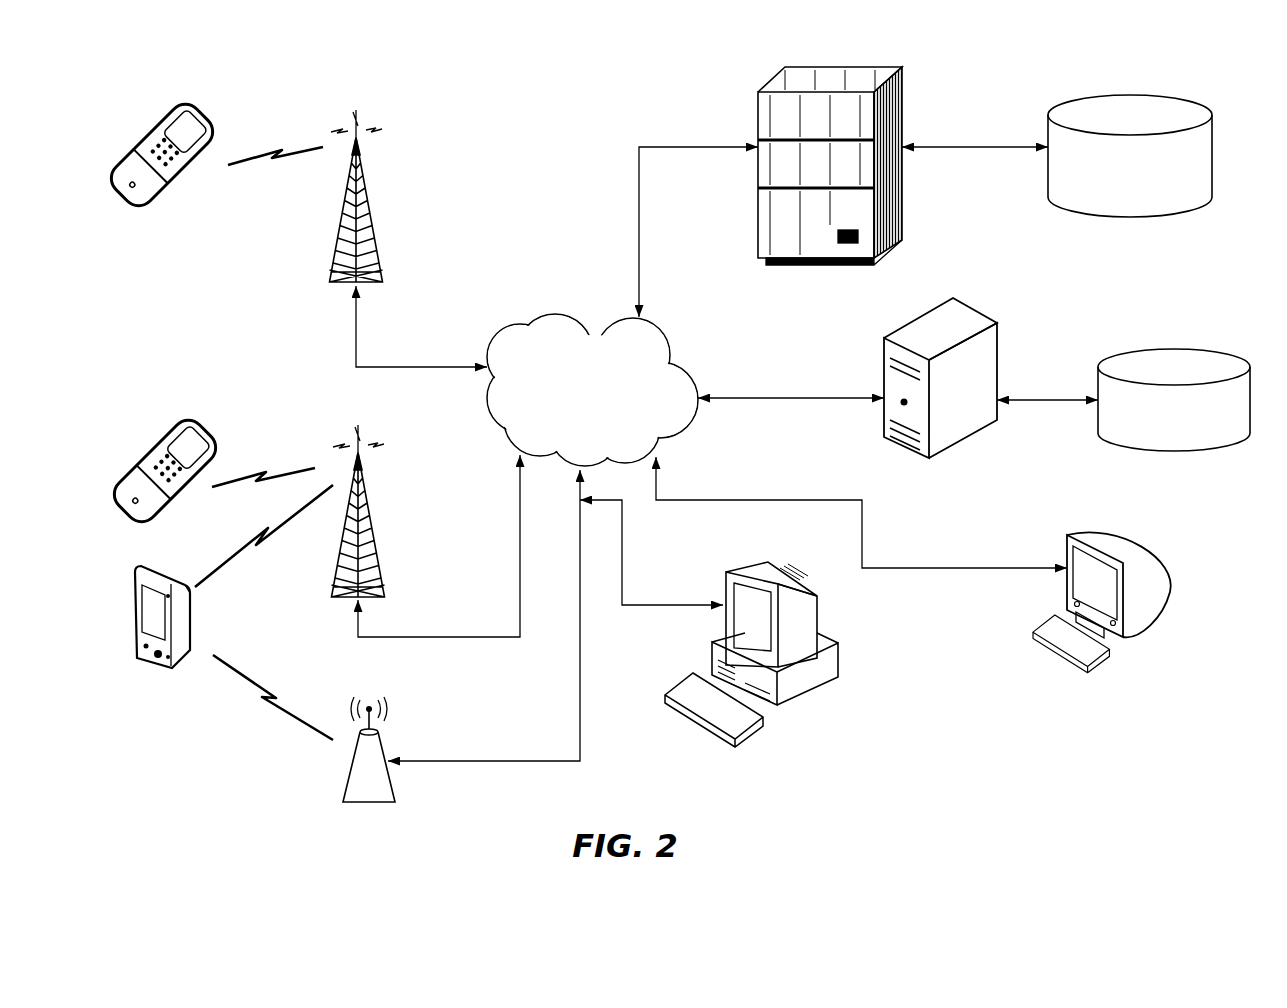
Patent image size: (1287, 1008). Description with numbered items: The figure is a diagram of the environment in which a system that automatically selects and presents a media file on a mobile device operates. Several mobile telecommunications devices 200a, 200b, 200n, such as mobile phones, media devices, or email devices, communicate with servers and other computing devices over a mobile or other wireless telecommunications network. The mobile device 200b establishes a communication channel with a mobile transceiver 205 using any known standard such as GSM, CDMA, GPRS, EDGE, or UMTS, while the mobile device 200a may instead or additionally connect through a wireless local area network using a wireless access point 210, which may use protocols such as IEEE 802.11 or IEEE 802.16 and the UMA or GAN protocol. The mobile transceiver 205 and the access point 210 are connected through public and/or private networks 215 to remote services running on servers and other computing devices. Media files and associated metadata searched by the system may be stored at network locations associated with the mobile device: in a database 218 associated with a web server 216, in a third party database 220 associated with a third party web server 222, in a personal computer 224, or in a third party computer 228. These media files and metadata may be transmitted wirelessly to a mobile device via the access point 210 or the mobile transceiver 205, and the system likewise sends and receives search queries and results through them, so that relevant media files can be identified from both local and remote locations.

The mobile telecommunications device 200n is at (212, 117).
The mobile telecommunications device 200b is at (218, 436).
The mobile telecommunications device 200a is at (168, 672).
The mobile transceiver 205 is at (372, 207).
The wireless access point 210 is at (390, 777).
The networks 215 is at (558, 313).
The web server 216 is at (902, 107).
The database 218 is at (1120, 94).
The third party database 220 is at (1172, 349).
The third party web server 222 is at (980, 312).
The personal computer 224 is at (1122, 541).
The third party computer 228 is at (747, 570).